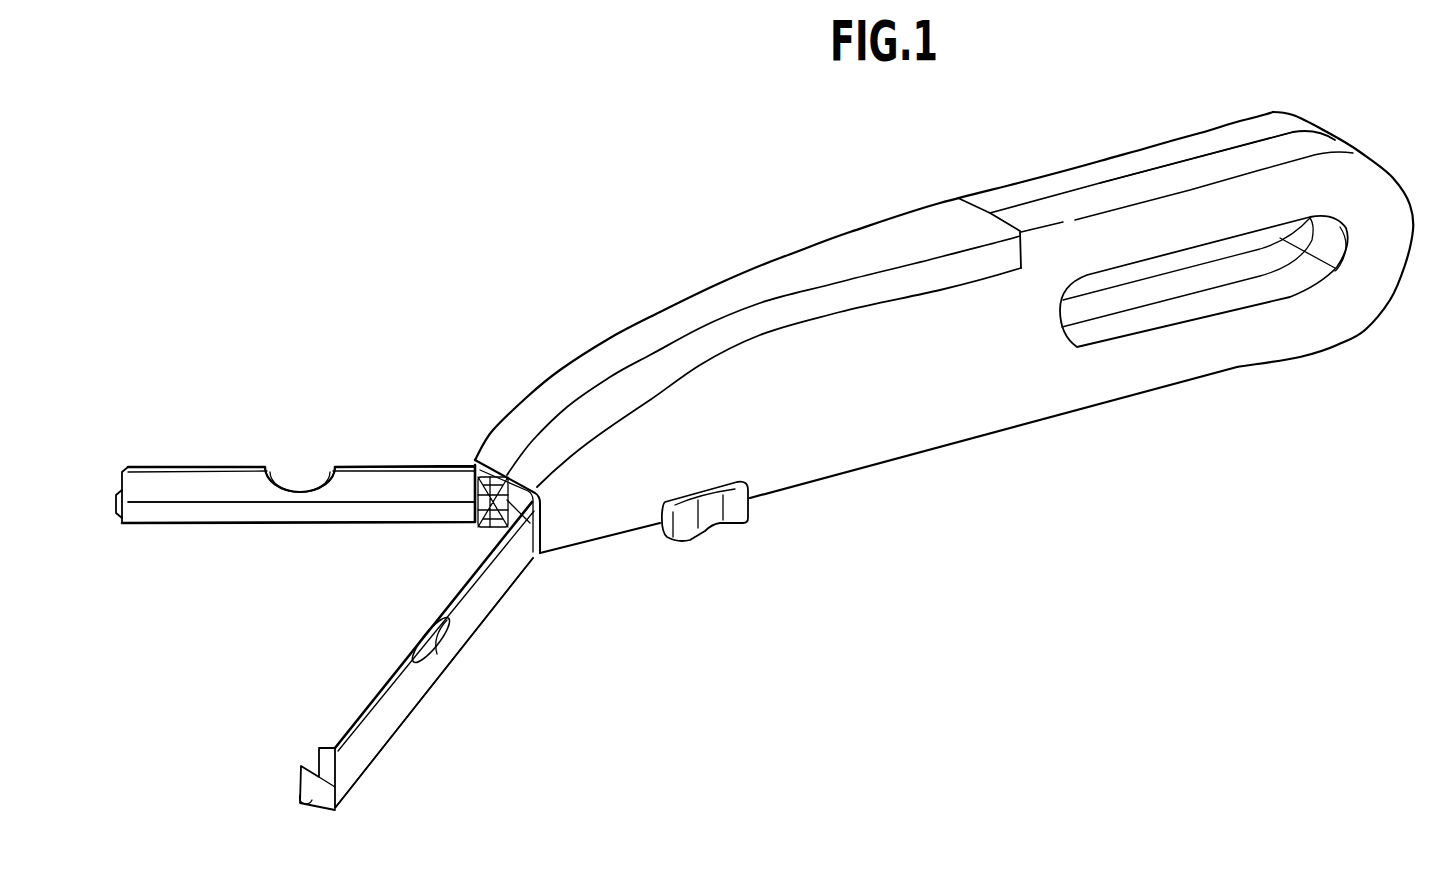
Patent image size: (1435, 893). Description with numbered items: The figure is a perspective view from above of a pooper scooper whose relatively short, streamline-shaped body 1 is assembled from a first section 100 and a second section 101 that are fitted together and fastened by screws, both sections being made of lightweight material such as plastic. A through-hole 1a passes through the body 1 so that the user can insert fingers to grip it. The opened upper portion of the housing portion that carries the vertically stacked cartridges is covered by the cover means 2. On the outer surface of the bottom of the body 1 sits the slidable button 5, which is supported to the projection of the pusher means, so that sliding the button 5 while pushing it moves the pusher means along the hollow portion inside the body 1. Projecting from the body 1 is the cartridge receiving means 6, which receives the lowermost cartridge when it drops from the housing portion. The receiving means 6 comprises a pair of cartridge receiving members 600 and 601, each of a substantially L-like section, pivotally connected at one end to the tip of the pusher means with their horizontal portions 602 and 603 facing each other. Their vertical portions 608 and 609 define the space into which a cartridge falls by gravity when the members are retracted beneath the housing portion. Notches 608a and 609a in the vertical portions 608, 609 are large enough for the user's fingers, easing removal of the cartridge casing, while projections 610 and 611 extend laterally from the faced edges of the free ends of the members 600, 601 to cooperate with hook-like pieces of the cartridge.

The body 1 is at (1053, 160).
The through-hole 1a is at (1198, 254).
The cover means 2 is at (857, 251).
The slidable button 5 is at (712, 527).
The cartridge receiving means 6 is at (432, 459).
The first section 100 is at (1181, 140).
The second section 101 is at (1328, 146).
The cartridge receiving member 600 is at (227, 463).
The cartridge receiving member 601 is at (467, 641).
The horizontal portion 602 is at (300, 510).
The horizontal portion 603 is at (427, 633).
The vertical portion 608 is at (388, 485).
The notch 608a is at (290, 480).
The vertical portion 609 is at (400, 705).
The notch 609a is at (443, 637).
The projection 610 is at (118, 515).
The projection 611 is at (313, 800).